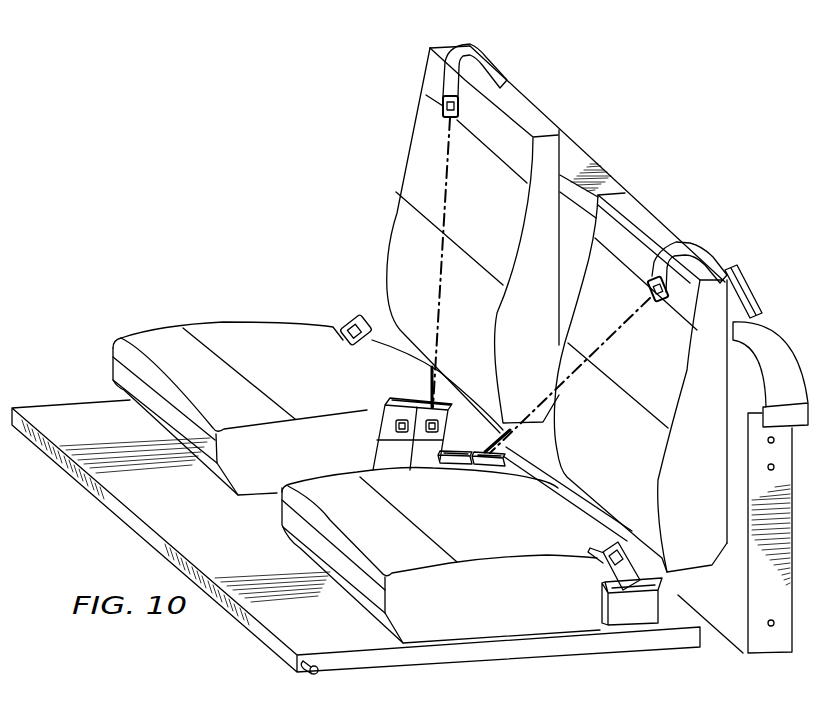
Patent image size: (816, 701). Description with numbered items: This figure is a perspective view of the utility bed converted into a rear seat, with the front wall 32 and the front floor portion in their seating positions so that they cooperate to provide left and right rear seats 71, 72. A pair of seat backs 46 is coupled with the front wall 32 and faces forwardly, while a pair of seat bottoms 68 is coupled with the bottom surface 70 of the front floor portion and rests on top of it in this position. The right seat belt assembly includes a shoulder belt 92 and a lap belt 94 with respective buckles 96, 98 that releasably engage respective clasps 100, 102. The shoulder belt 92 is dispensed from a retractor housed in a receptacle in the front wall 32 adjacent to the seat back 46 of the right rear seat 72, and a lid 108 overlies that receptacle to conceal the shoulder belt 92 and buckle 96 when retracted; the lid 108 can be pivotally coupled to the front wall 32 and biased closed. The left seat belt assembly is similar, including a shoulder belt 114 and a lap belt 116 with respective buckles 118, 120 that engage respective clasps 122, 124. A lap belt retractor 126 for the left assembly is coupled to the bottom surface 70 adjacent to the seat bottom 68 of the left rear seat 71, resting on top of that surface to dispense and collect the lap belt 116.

The front wall 32 is at (588, 156).
The seat backs 46 is at (422, 183).
The seat bottoms 68 is at (174, 340).
The bottom surface 70 is at (70, 412).
The left rear seat 71 is at (268, 528).
The right rear seat 72 is at (227, 255).
The shoulder belt 92 is at (476, 48).
The lap belt 94 is at (372, 337).
The buckle 96 is at (441, 110).
The buckle 98 is at (343, 318).
The clasp 100 is at (376, 417).
The clasp 102 is at (403, 405).
The lid 108 is at (740, 278).
The shoulder belt 114 is at (700, 240).
The lap belt 116 is at (637, 545).
The buckle 118 is at (655, 305).
The buckle 120 is at (603, 548).
The clasp 122 is at (491, 468).
The clasp 124 is at (460, 465).
The lap belt retractor 126 is at (640, 612).